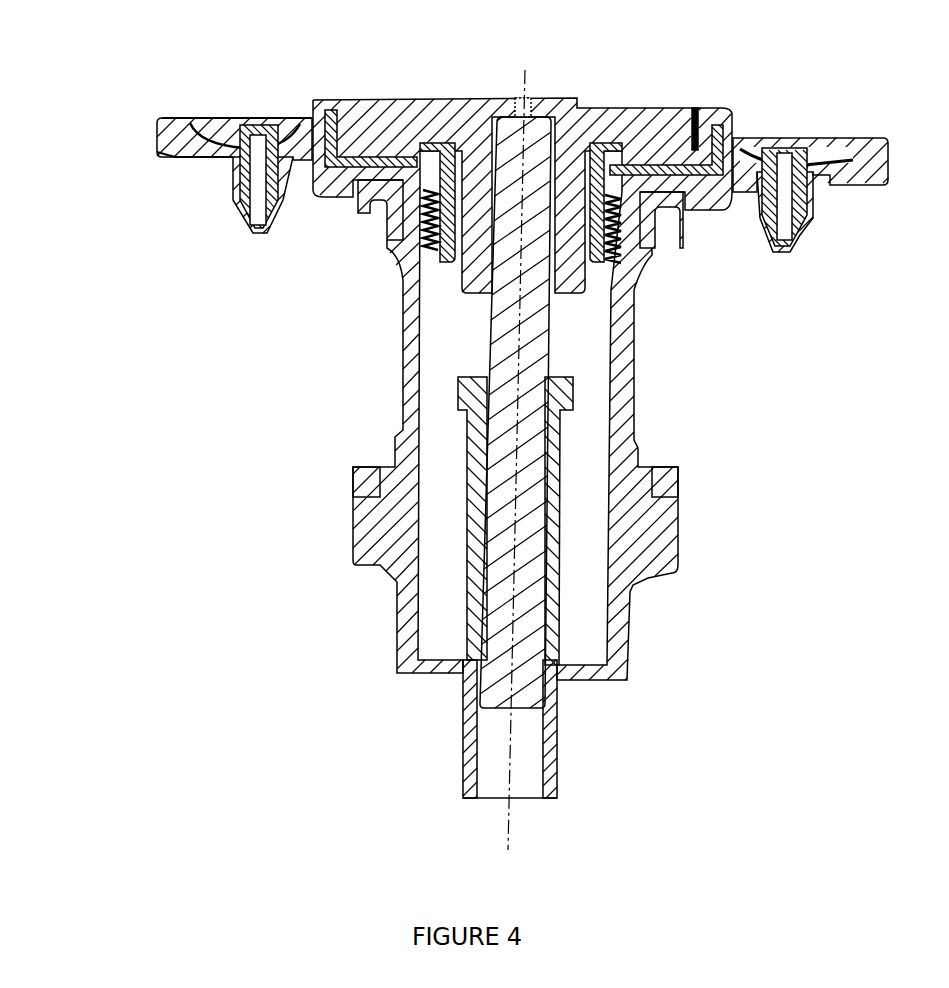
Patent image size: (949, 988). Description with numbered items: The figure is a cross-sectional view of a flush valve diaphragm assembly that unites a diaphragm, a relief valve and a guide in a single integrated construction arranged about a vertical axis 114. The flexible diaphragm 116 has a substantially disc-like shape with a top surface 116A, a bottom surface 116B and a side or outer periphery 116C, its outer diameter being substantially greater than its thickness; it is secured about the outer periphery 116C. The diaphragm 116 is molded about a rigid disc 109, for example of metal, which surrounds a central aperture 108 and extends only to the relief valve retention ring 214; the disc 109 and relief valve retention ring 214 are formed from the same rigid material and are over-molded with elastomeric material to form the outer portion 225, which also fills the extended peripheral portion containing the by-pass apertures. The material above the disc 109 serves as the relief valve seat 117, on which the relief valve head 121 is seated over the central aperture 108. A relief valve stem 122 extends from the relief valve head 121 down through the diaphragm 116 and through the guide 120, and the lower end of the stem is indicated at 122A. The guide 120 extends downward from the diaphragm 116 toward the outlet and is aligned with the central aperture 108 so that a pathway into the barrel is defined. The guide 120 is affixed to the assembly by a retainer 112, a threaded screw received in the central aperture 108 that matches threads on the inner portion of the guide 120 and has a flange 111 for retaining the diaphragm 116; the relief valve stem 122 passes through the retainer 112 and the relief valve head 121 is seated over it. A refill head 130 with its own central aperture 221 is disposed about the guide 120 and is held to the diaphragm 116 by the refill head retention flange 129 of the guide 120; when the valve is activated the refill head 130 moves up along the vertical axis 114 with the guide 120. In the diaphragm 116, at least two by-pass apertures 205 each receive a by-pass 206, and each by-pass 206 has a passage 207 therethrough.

The disc 109 is at (522, 162).
The flange 111 is at (418, 101).
The relief valve retention ring 214 is at (696, 111).
The relief valve head 121 is at (587, 76).
The central aperture 108 is at (437, 250).
The retainer 112 is at (462, 240).
The refill head retention flange 129 is at (677, 301).
The relief valve seat 117 is at (358, 222).
The refill head 130 is at (786, 258).
The central aperture 221 is at (783, 304).
The guide 120 is at (642, 430).
The relief valve stem 122 is at (495, 345).
The lower tube 122A is at (460, 730).
The diaphragm 116 is at (184, 137).
The top surface 116A is at (187, 83).
The outer periphery 116C is at (115, 176).
The bottom surface 116B is at (144, 207).
The by-pass 206 is at (234, 132).
The passage 207 is at (286, 129).
The outer portion 225 is at (825, 124).
The by-pass aperture 205 is at (842, 207).
The vertical axis 114 is at (519, 462).